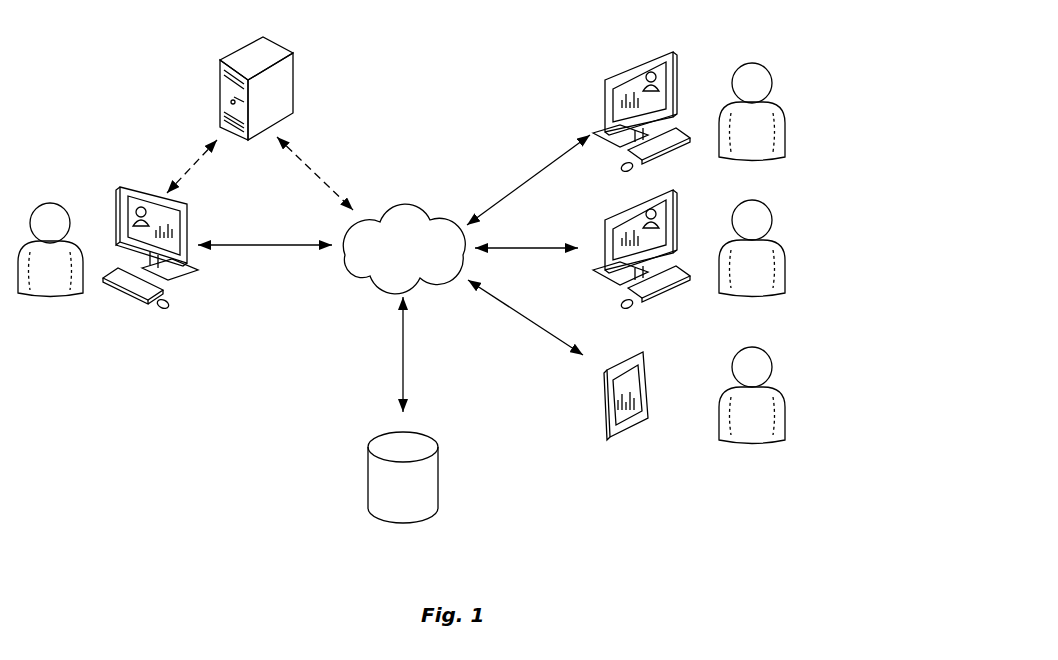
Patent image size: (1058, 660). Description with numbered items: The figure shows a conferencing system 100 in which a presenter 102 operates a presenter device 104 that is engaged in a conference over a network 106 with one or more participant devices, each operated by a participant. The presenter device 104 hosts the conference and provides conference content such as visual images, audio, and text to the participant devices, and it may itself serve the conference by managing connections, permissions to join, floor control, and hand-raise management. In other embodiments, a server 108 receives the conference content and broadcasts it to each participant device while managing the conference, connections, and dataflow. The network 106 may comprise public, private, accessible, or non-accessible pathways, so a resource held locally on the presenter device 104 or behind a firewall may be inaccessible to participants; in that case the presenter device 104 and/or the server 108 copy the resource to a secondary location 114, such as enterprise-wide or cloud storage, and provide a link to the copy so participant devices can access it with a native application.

The system 100 is at (880, 50).
The presenter 102 is at (67, 202).
The presenter device 104 is at (188, 218).
The network 106 is at (387, 213).
The server 108 is at (293, 84).
The secondary location 114 is at (440, 473).